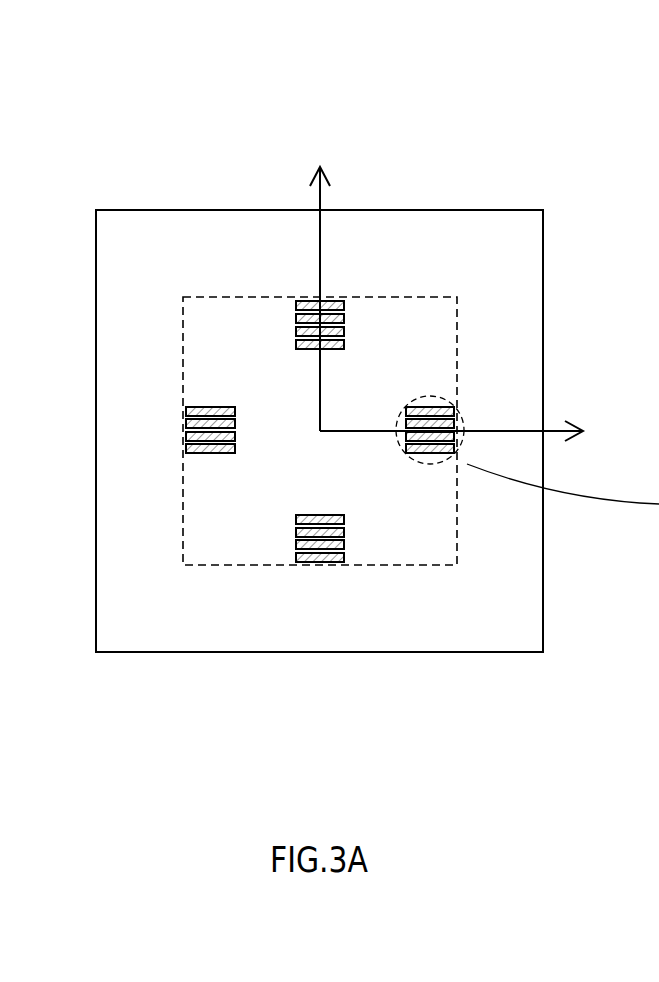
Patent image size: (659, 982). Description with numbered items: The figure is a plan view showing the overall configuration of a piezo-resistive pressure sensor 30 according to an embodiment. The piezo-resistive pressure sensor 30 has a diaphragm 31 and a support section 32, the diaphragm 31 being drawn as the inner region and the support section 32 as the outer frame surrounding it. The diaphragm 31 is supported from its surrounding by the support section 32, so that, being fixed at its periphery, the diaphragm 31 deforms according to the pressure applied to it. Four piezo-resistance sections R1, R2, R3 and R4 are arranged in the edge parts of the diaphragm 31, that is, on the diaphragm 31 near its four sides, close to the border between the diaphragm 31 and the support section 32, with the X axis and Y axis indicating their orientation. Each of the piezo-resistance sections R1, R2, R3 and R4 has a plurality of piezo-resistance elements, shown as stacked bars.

The piezo-resistive pressure sensor 30 is at (195, 108).
The diaphragm 31 is at (404, 308).
The support section 32 is at (528, 210).
The piezo-resistance section R1 is at (447, 428).
The piezo-resistance section R2 is at (308, 306).
The piezo-resistance section R3 is at (189, 433).
The piezo-resistance section R4 is at (324, 559).